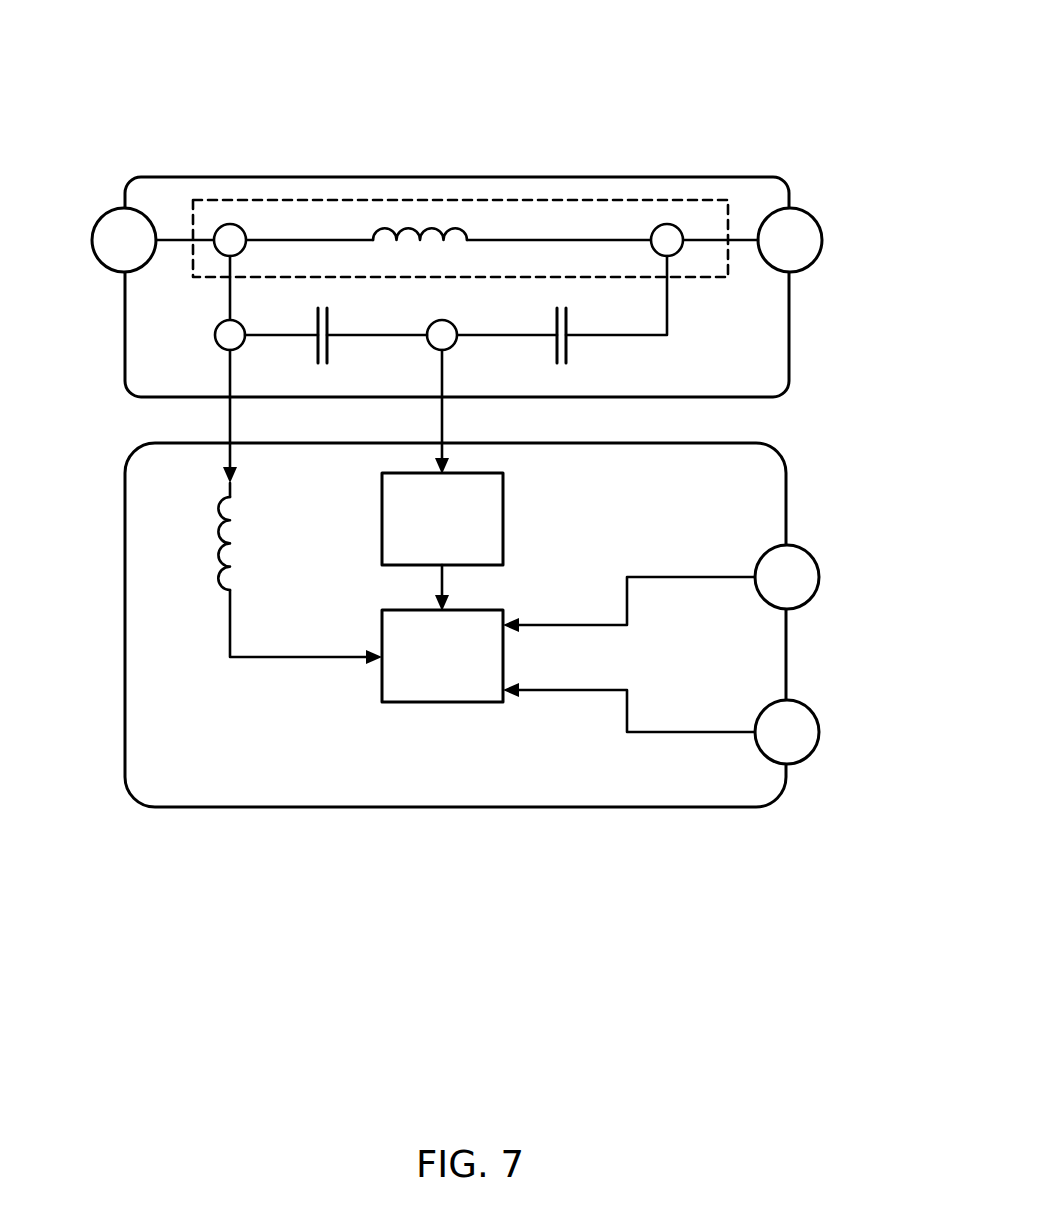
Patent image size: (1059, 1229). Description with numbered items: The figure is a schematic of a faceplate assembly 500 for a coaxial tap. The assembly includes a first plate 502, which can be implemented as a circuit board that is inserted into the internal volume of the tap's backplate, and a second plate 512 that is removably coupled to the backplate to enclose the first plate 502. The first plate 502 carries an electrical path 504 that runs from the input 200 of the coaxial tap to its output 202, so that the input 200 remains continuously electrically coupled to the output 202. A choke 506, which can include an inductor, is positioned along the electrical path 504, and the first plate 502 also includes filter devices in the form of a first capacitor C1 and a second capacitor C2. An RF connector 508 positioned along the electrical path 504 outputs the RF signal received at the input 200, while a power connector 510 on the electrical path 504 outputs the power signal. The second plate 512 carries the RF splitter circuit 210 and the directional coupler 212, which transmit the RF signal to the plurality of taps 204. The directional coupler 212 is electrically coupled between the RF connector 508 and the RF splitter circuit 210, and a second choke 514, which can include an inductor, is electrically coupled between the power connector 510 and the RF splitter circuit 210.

The faceplate assembly 500 is at (699, 92).
The first plate 502 is at (272, 177).
The electrical path 504 is at (600, 200).
The choke 506 is at (410, 226).
The RF connector 508 is at (455, 347).
The power connector 510 is at (214, 334).
The second plate 512 is at (780, 474).
The choke 514 is at (216, 534).
The input 200 is at (102, 218).
The output 202 is at (812, 220).
The taps 204 is at (808, 556).
The RF splitter circuit 210 is at (442, 656).
The directional coupler 212 is at (442, 542).
The first capacitor C1 is at (328, 352).
The second capacitor C2 is at (567, 352).